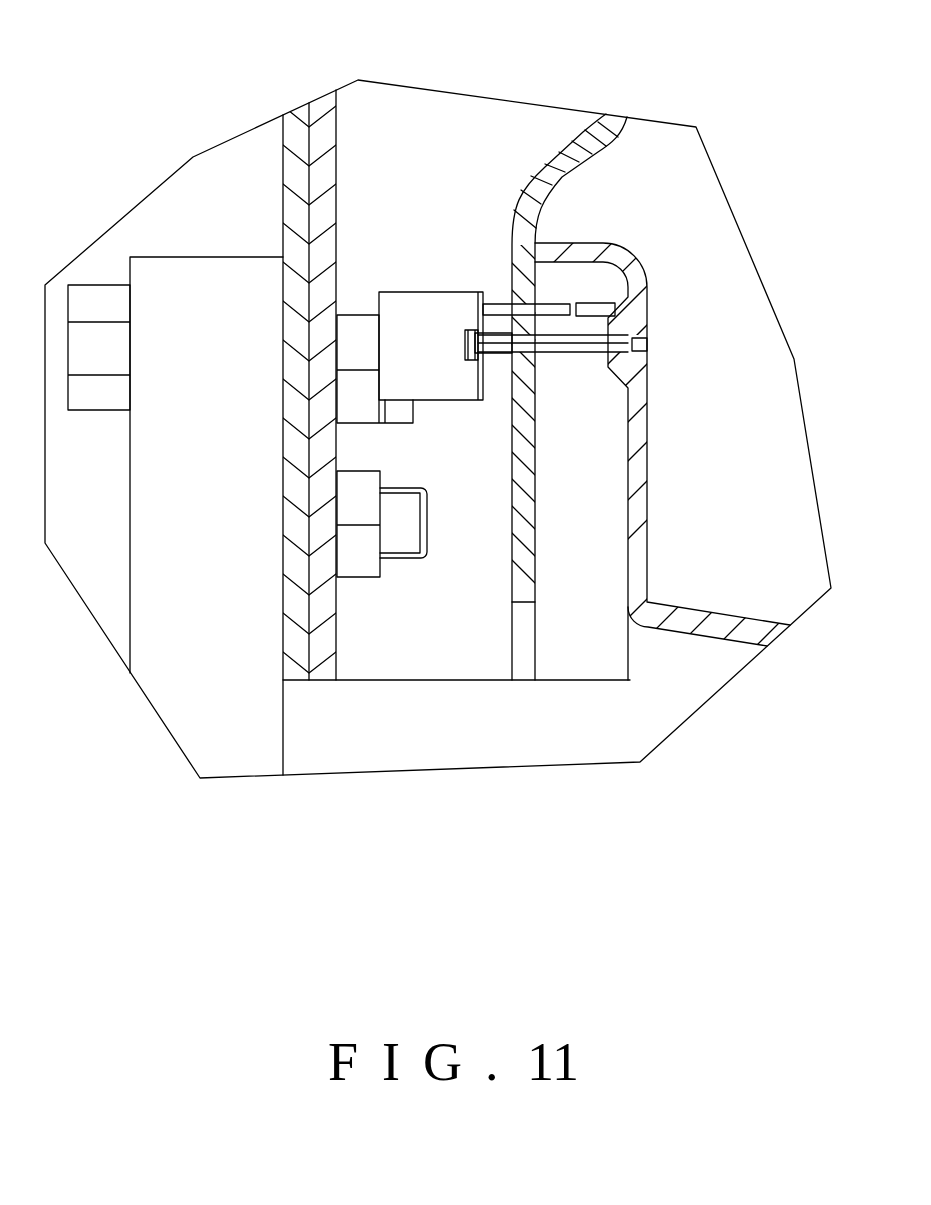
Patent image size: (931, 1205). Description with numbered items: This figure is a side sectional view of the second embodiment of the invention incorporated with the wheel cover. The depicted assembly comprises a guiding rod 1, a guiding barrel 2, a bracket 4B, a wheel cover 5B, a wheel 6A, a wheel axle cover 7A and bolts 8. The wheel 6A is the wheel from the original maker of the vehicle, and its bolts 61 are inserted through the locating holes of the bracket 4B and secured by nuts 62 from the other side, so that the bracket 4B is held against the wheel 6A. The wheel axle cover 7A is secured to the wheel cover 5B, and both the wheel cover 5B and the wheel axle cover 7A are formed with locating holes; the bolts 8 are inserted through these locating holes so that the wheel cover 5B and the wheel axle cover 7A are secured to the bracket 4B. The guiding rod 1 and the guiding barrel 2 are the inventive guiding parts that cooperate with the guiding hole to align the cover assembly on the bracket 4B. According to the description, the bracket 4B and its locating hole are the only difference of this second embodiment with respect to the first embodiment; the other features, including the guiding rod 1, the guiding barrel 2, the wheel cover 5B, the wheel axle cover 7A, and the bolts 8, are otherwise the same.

The guiding rod 1 is at (582, 309).
The guiding barrel 2 is at (500, 352).
The bracket 4B is at (397, 308).
The wheel cover 5B is at (607, 128).
The wheel 6A is at (295, 128).
The wheel axle cover 7A is at (755, 628).
The bolts 8 is at (603, 345).
The bolts 61 is at (405, 542).
The nuts 62 is at (353, 565).